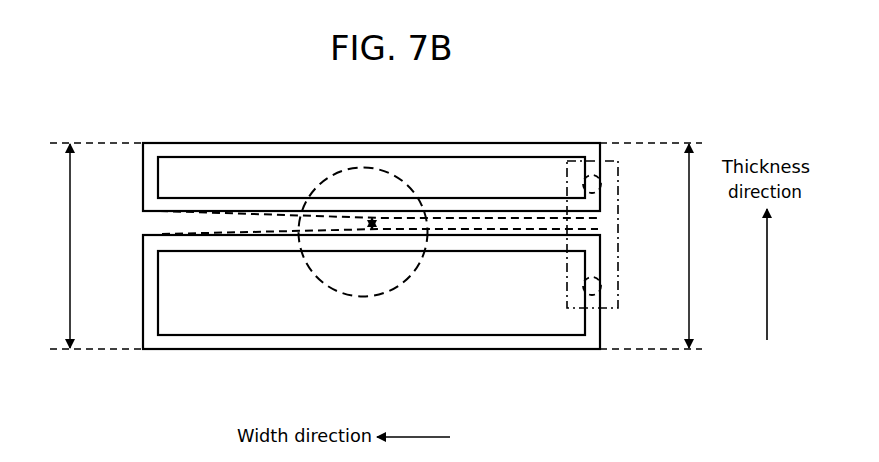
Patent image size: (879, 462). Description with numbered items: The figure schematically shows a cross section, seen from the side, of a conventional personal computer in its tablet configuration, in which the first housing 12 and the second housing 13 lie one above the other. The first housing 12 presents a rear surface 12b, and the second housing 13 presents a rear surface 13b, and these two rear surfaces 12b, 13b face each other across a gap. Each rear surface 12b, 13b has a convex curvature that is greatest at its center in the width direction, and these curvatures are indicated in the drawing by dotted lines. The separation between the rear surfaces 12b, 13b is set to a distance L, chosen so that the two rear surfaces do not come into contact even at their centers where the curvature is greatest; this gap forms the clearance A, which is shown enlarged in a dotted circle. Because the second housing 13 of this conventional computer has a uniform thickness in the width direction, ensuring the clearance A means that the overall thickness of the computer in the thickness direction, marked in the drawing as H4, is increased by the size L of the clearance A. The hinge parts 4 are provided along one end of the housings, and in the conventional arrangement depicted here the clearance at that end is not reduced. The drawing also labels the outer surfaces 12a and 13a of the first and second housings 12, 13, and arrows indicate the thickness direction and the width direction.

The hinge parts 4 is at (593, 310).
The first housing 12 is at (628, 289).
The lower surface of lower member 12a is at (172, 350).
The rear surface of first housing 12b is at (180, 235).
The second housing 13 is at (628, 181).
The upper surface of upper member 13a is at (555, 143).
The rear surface of second housing 13b is at (528, 217).
The distance L is at (371, 216).
The clearance A is at (362, 297).
The thickness dimension H4 is at (70, 256).